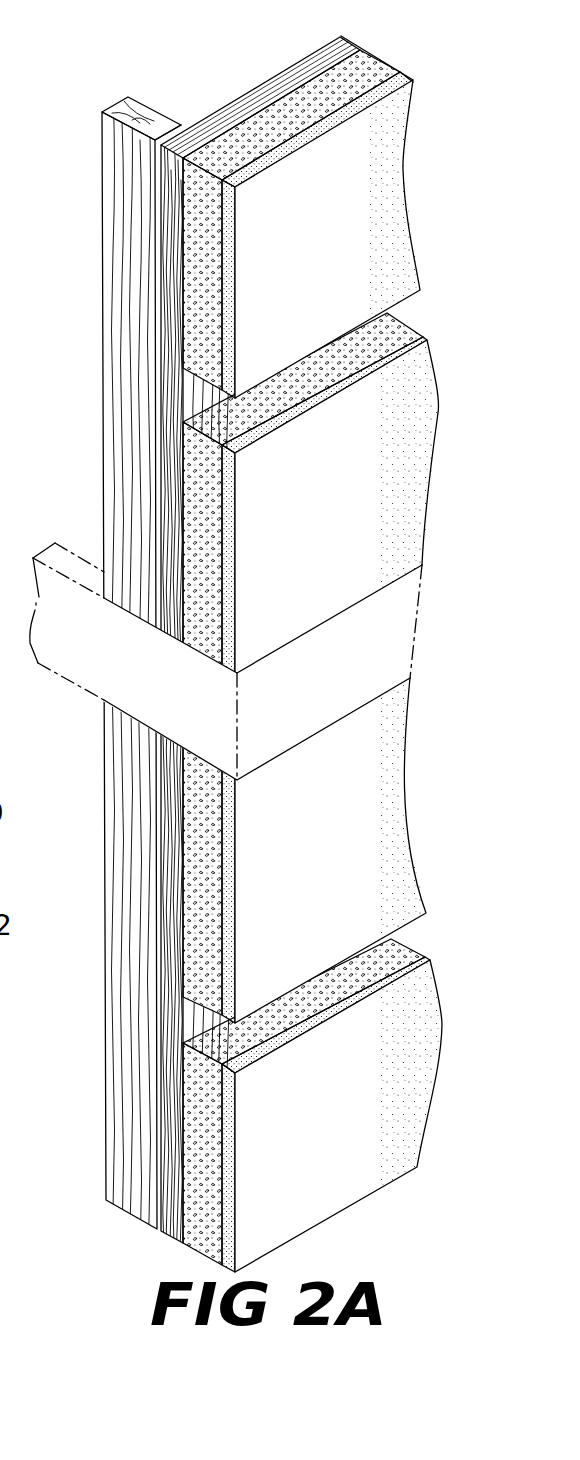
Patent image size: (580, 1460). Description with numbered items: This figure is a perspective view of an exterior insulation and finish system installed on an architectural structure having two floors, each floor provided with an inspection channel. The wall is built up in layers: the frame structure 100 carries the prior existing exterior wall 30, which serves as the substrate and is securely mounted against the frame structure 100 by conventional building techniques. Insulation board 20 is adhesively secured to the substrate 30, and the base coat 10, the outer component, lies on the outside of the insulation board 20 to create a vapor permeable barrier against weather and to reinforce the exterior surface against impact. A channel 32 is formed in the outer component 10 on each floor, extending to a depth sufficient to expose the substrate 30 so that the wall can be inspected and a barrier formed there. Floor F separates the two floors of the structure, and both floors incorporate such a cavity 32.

The base coat 10 is at (333, 249).
The insulation board 20 is at (337, 93).
The exterior wall 30 is at (253, 100).
The channel 32 is at (404, 318).
The frame structure 100 is at (143, 104).
The floor F is at (30, 597).